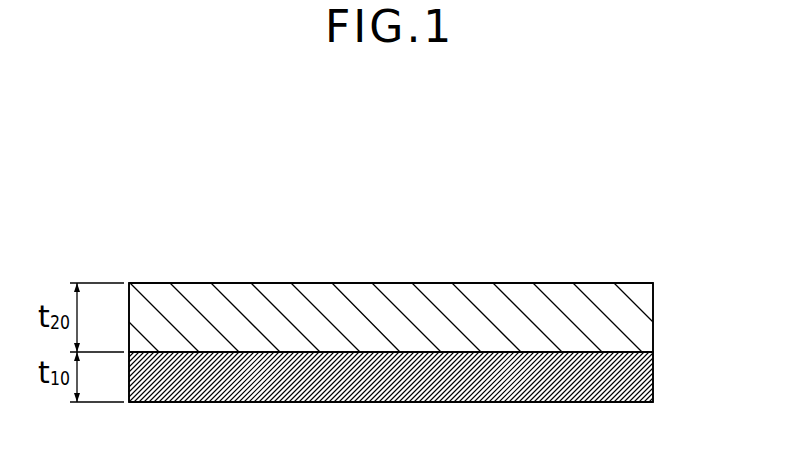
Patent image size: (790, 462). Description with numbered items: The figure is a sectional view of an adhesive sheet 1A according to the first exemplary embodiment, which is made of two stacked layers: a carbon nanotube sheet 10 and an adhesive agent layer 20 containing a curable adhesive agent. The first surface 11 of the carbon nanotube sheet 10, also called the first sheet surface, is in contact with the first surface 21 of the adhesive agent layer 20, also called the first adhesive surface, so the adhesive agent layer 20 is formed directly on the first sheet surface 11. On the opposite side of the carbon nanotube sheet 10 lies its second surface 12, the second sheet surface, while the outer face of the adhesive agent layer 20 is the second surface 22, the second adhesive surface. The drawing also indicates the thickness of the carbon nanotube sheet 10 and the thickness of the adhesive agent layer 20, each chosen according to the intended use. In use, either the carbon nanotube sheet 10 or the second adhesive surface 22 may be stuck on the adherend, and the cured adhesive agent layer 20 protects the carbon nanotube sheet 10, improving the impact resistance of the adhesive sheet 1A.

The adhesive sheet 1A is at (573, 191).
The carbon nanotube sheet 10 is at (642, 387).
The first surface of the carbon nanotube sheet 11 is at (612, 352).
The second surface of the carbon nanotube sheet 12 is at (608, 403).
The adhesive agent layer 20 is at (641, 303).
The first surface of the adhesive agent layer 21 is at (635, 355).
The second surface of the adhesive agent layer 22 is at (623, 282).